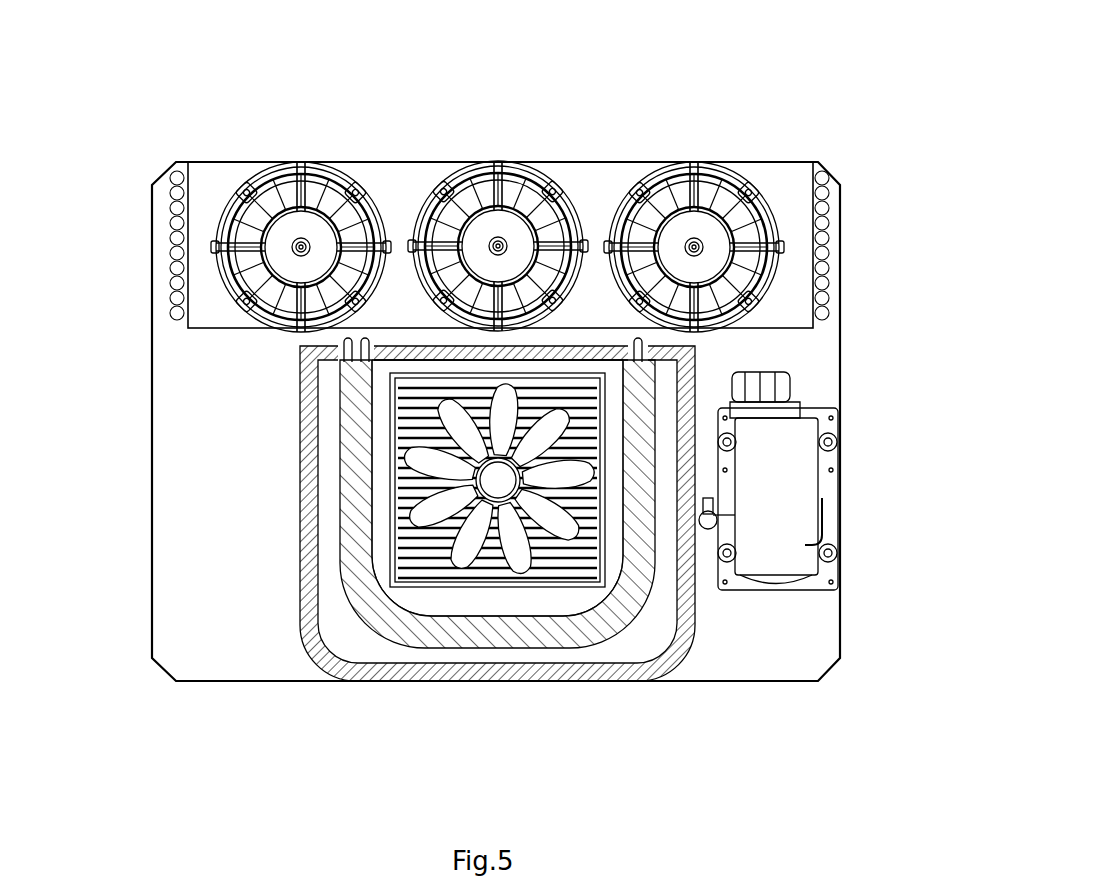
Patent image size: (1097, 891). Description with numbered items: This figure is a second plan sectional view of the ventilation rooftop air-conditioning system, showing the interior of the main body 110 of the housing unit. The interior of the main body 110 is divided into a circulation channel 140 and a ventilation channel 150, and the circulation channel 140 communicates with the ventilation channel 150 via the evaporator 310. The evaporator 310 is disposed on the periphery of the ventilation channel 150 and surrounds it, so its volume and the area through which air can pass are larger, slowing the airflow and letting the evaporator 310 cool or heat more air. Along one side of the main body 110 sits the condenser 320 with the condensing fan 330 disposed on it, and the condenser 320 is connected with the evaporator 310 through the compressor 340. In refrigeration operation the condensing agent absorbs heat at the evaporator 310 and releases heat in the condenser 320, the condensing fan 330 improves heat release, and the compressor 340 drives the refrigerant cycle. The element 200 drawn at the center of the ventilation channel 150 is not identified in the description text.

The main body 110 is at (285, 517).
The circulation channel 140 is at (377, 664).
The ventilation channel 150 is at (558, 612).
The heat exchanger 200 is at (466, 467).
The evaporator 310 is at (656, 393).
The condenser 320 is at (818, 219).
The condensing fan 330 is at (726, 178).
The compressor 340 is at (783, 481).